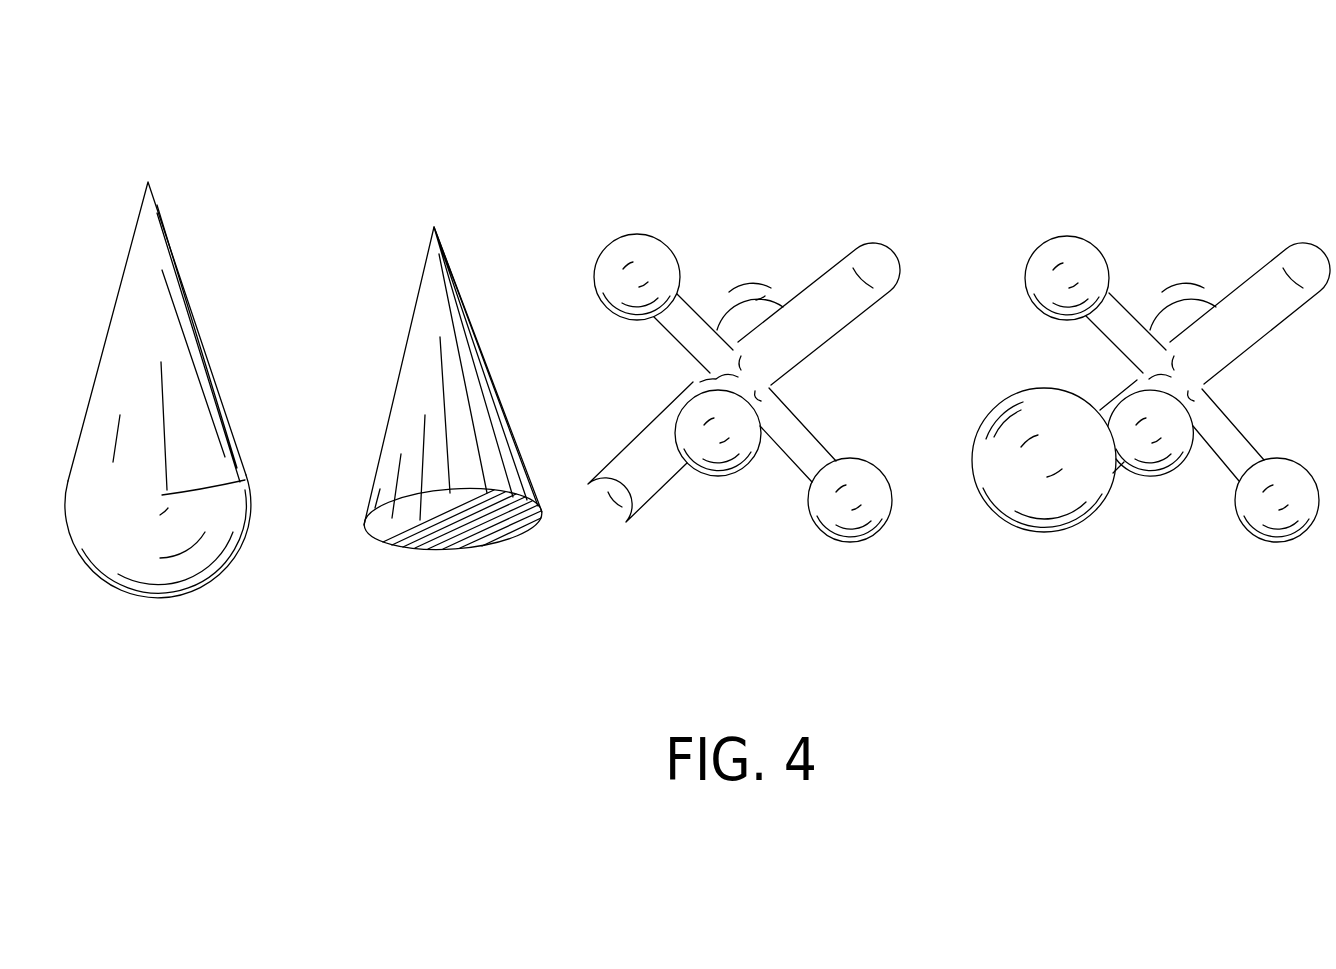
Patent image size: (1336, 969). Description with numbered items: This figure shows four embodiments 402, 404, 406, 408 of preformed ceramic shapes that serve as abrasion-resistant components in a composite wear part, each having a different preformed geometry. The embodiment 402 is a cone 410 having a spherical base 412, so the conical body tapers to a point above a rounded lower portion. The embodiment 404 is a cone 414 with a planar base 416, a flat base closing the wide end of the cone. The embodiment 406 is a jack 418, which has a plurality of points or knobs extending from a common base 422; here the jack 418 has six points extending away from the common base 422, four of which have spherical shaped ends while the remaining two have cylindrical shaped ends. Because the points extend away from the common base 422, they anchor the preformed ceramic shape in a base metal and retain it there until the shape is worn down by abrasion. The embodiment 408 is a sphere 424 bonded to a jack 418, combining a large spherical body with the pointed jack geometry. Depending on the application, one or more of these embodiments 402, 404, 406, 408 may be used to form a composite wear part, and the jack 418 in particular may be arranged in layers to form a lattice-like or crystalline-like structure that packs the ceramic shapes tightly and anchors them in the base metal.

The embodiment 402 is at (142, 140).
The embodiment 404 is at (428, 140).
The embodiment 406 is at (742, 143).
The embodiment 408 is at (1177, 140).
The cone 410 is at (200, 256).
The spherical base 412 is at (196, 616).
The cone 414 is at (473, 256).
The planar base 416 is at (501, 565).
The jack 418 is at (800, 204).
The common base 422 is at (770, 388).
The sphere 424 is at (987, 382).